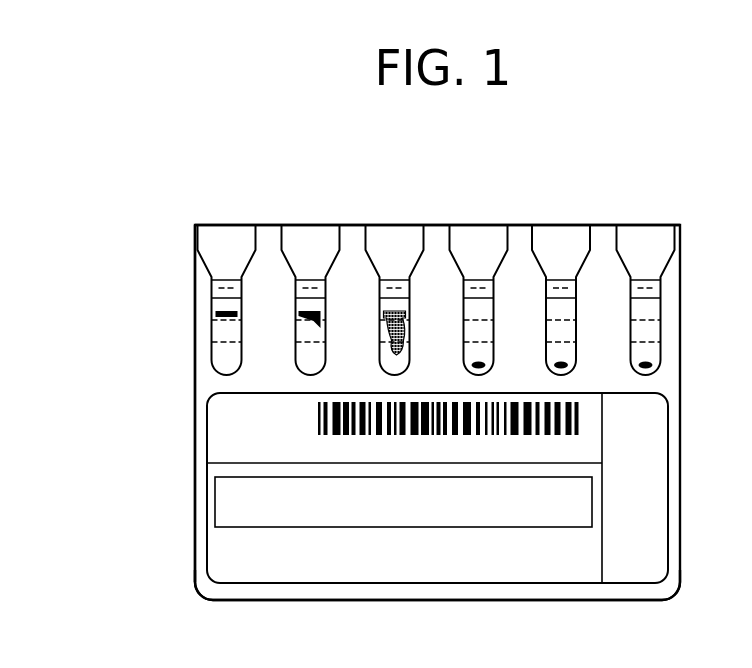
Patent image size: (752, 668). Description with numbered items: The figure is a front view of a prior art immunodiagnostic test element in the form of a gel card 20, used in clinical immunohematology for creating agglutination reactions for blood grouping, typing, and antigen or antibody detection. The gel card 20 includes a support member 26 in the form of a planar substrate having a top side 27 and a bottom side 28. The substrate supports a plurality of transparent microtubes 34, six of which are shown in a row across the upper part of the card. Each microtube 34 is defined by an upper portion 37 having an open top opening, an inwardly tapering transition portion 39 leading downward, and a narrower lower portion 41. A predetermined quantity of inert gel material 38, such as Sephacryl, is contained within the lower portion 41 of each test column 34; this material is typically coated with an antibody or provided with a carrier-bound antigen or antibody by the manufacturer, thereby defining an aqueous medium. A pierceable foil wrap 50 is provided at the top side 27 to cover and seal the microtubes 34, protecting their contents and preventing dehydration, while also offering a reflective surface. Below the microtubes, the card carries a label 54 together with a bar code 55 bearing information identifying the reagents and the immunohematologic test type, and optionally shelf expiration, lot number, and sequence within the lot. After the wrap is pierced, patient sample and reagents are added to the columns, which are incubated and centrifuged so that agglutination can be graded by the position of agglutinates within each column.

The gel card 20 is at (335, 169).
The support member 26 is at (193, 341).
The top side 27 is at (268, 224).
The bottom side 28 is at (312, 601).
The microtubes 34 is at (208, 243).
The upper portion 37 is at (545, 237).
The gel material 38 is at (655, 330).
The inwardly tapering transition portion 39 is at (207, 270).
The lower portion 41 is at (225, 367).
The foil wrap 50 is at (212, 225).
The label 54 is at (220, 553).
The bar code 55 is at (318, 415).